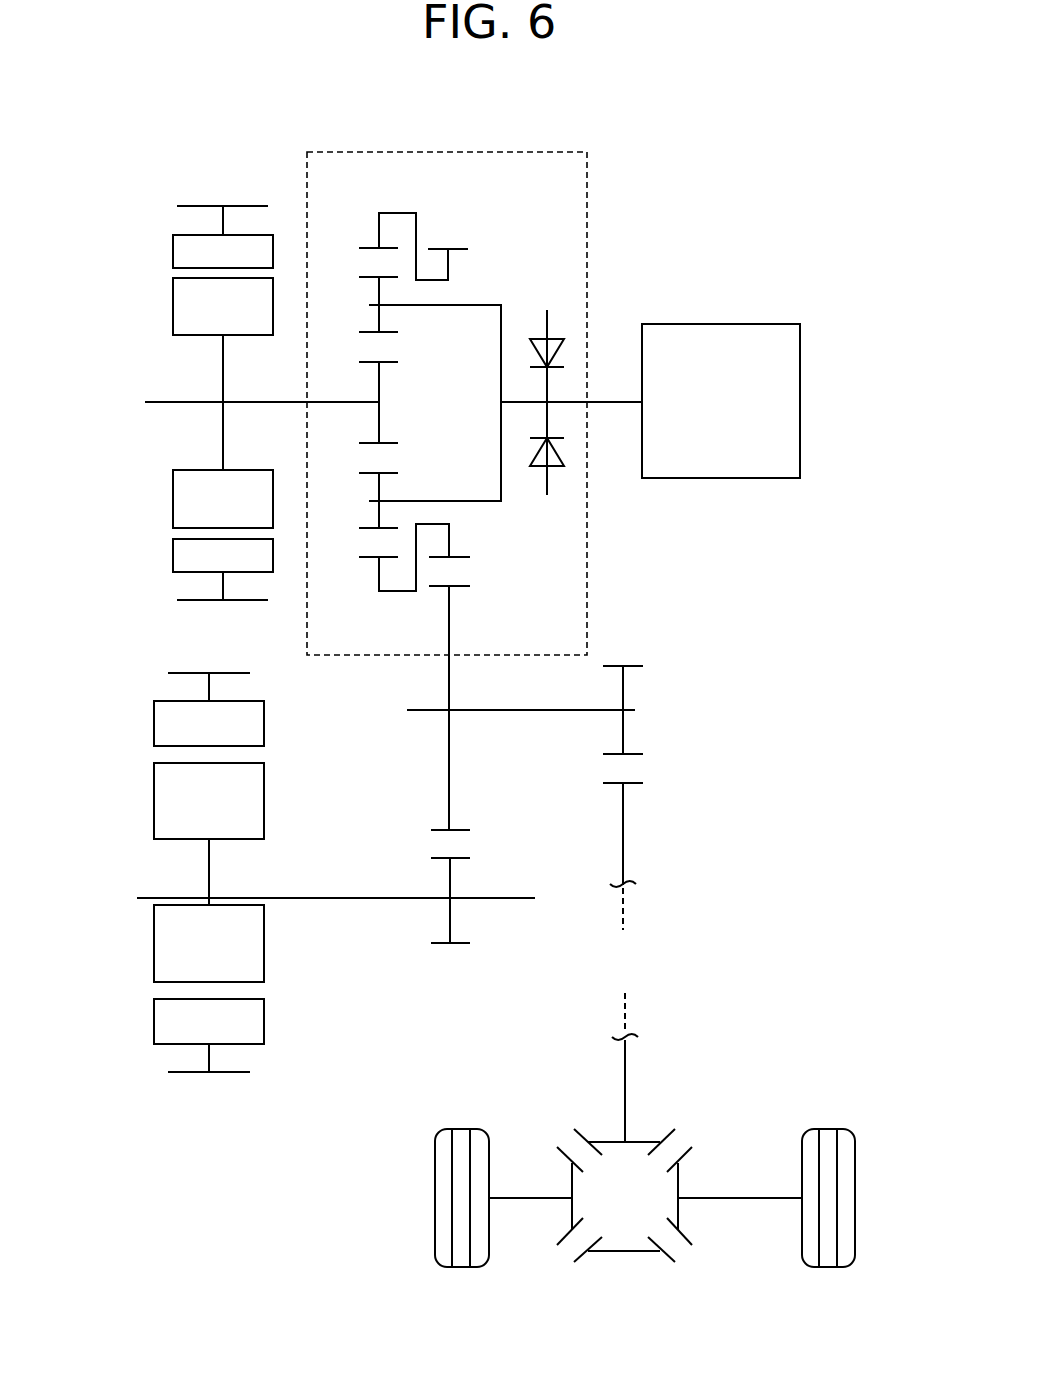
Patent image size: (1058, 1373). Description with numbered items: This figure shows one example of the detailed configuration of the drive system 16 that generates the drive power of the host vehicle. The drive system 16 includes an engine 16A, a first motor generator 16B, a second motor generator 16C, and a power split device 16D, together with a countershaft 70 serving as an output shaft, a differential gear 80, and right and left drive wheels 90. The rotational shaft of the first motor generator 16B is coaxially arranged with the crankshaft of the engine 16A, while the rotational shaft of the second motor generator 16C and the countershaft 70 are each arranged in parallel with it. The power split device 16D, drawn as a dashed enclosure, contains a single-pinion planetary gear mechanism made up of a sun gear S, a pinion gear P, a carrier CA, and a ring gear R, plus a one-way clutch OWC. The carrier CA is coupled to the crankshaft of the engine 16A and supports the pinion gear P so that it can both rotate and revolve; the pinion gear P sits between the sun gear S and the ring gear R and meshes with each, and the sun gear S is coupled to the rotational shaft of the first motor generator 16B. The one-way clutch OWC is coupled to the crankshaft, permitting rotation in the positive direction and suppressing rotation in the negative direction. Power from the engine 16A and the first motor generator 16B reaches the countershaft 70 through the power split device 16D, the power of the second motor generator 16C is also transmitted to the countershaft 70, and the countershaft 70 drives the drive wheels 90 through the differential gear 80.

The drive system 16 is at (517, 84).
The engine 16A is at (722, 324).
The first motor generator 16B is at (143, 287).
The second motor generator 16C is at (143, 807).
The power split device 16D is at (515, 152).
The countershaft 70 is at (500, 712).
The differential gear 80 is at (643, 1140).
The drive wheels 90 is at (462, 1129).
The ring gear R is at (370, 247).
The pinion gear P is at (370, 279).
The carrier CA is at (410, 307).
The sun gear S is at (387, 363).
The one-way clutch OWC is at (548, 293).